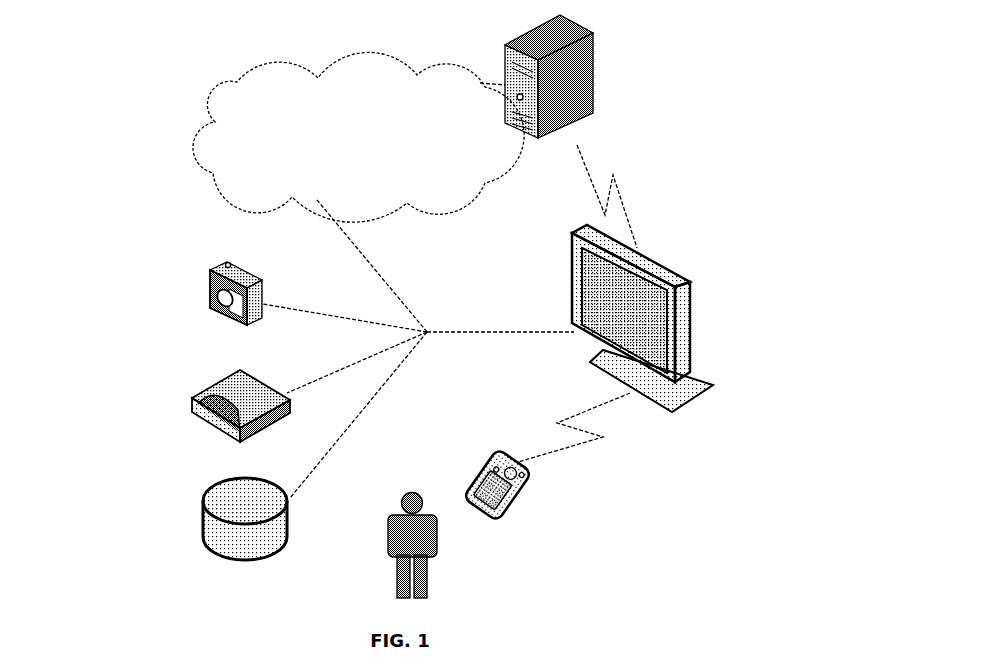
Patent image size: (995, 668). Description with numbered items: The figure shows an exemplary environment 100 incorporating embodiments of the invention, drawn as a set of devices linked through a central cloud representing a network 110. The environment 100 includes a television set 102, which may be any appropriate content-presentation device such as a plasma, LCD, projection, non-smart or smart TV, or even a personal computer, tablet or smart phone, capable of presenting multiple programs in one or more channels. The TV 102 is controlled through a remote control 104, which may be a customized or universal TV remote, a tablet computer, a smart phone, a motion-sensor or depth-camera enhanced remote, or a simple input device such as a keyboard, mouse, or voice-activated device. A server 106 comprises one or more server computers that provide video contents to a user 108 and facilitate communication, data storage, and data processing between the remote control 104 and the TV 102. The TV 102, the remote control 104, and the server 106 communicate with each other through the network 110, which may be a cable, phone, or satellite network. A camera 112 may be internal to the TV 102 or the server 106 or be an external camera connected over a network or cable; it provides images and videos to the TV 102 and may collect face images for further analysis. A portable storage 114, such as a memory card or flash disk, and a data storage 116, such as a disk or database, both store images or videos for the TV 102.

The environment 100 is at (86, 44).
The television set 102 is at (693, 317).
The remote control 104 is at (515, 512).
The server 106 is at (597, 88).
The user 108 is at (443, 578).
The network 110 is at (381, 149).
The camera 112 is at (208, 298).
The portable storage 114 is at (190, 420).
The data storage 116 is at (202, 545).